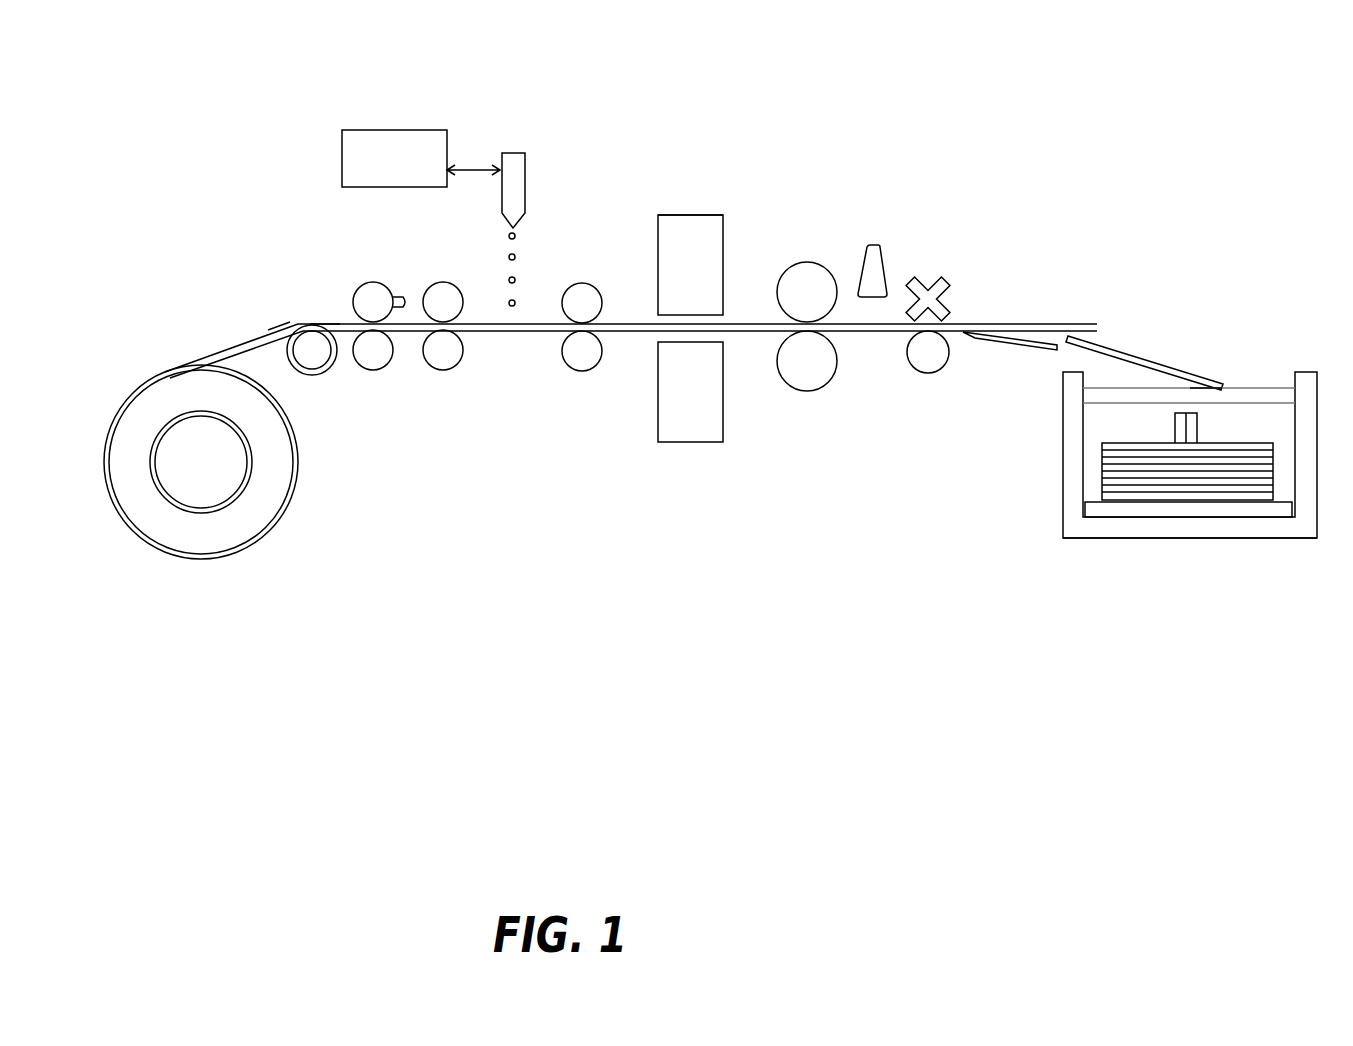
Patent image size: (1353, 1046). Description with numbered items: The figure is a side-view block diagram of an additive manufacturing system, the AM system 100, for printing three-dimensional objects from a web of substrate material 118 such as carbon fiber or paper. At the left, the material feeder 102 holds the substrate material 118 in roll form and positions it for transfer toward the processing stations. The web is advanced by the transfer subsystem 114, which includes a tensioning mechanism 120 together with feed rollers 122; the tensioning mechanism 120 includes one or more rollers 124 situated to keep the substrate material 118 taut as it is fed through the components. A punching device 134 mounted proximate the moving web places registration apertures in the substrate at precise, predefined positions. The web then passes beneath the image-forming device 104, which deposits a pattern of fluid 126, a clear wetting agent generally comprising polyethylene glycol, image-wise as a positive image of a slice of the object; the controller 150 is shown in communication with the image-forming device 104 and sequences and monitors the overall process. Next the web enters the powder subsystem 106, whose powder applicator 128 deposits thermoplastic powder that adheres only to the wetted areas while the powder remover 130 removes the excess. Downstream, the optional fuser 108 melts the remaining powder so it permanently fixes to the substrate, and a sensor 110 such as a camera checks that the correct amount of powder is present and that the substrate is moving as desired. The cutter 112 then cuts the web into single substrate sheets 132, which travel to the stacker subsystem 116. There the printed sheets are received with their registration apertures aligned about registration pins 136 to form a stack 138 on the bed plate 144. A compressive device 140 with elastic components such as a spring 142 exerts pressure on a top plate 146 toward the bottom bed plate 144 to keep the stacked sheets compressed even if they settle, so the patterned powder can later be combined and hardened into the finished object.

The AM system 100 is at (242, 131).
The material feeder 102 is at (205, 557).
The image-forming device 104 is at (512, 152).
The powder subsystem 106 is at (721, 206).
The fuser 108 is at (813, 262).
The sensor 110 is at (878, 245).
The cutter 112 is at (937, 283).
The transfer subsystem 114 is at (329, 305).
The stacker subsystem 116 is at (1118, 554).
The substrate material 118 is at (264, 336).
The tensioning mechanism 120 is at (279, 316).
The feed rollers 122 is at (443, 282).
The rollers 124 is at (314, 375).
The fluid 126 is at (518, 254).
The powder applicator 128 is at (672, 214).
The powder remover 130 is at (677, 443).
The substrate sheets 132 is at (1126, 352).
The punching device 134 is at (374, 282).
The registration pins 136 is at (1175, 437).
The stack 138 is at (1098, 461).
The compressive device 140 is at (1284, 366).
The spring 142 is at (1200, 370).
The bed plate 144 is at (1083, 513).
The top plate 146 is at (1250, 387).
The controller 150 is at (399, 129).